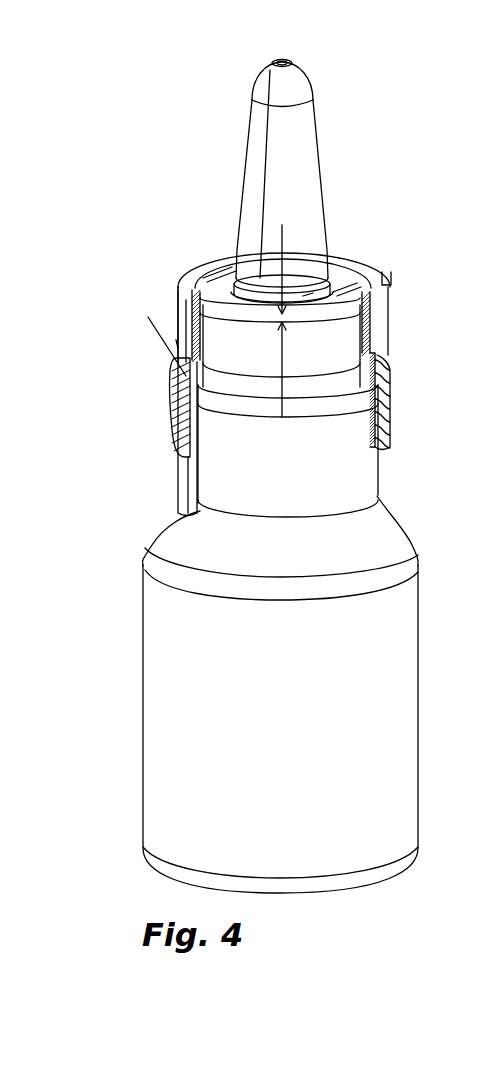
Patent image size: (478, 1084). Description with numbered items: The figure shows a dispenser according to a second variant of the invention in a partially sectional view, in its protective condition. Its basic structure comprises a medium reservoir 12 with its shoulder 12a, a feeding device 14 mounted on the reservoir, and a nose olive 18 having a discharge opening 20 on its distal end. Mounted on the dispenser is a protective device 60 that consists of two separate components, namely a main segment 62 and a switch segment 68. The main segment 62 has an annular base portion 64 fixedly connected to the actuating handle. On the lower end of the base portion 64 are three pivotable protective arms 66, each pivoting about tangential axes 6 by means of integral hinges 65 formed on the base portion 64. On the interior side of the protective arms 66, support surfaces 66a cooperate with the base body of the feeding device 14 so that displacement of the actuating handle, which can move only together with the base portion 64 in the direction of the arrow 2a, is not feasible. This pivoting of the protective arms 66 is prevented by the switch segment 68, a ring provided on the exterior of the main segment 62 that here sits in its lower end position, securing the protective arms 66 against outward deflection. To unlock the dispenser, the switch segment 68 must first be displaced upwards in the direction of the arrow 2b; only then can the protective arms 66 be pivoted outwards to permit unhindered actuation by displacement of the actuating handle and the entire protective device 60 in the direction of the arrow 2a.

The arrow 2a is at (285, 272).
The arrow 2b is at (283, 360).
The tangential axes 6 is at (176, 340).
The medium reservoir 12 is at (300, 660).
The bottle shoulder 12a is at (353, 538).
The feeding device 14 is at (348, 447).
The nose olive 18 is at (320, 193).
The discharge opening 20 is at (288, 58).
The protective device 60 is at (212, 220).
The main segment 62 is at (180, 264).
The base portion 64 is at (182, 300).
The integral hinges 65 is at (173, 397).
The protective arms 66 is at (183, 483).
The support surfaces 66a is at (215, 390).
The switch segment 68 is at (172, 450).